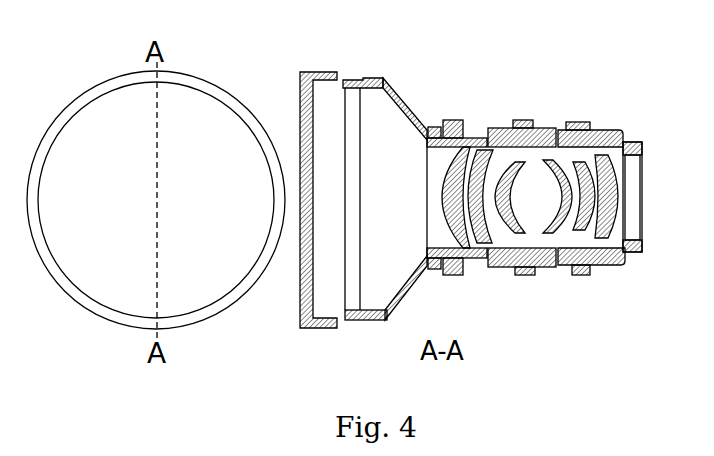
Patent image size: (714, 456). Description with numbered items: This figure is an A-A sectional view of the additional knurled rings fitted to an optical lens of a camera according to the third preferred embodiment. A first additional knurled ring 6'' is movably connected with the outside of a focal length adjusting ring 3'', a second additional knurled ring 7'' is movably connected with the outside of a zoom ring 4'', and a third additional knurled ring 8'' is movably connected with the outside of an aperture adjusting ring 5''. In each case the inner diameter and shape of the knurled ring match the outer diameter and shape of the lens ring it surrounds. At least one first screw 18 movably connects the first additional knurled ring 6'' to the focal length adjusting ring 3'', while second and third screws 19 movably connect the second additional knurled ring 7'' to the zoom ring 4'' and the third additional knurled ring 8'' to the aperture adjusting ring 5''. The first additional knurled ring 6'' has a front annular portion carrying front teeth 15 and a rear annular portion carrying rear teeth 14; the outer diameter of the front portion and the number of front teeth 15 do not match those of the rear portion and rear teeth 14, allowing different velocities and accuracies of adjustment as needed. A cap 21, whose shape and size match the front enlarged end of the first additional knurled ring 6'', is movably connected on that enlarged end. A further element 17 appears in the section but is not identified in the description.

The cap 21 is at (80, 313).
The front tooth 15 is at (374, 187).
The projection 17 is at (432, 125).
The rear tooth 14 is at (453, 119).
The first screws 18 is at (523, 169).
The second screws 19 is at (587, 169).
The focal length adjusting ring 3'' is at (471, 136).
The second additional knurled ring 7'' is at (535, 145).
The zoom ring 4'' is at (586, 140).
The third additional knurled ring 8'' is at (594, 145).
The aperture adjusting ring 5'' is at (630, 231).
The first additional knurled ring 6'' is at (388, 218).